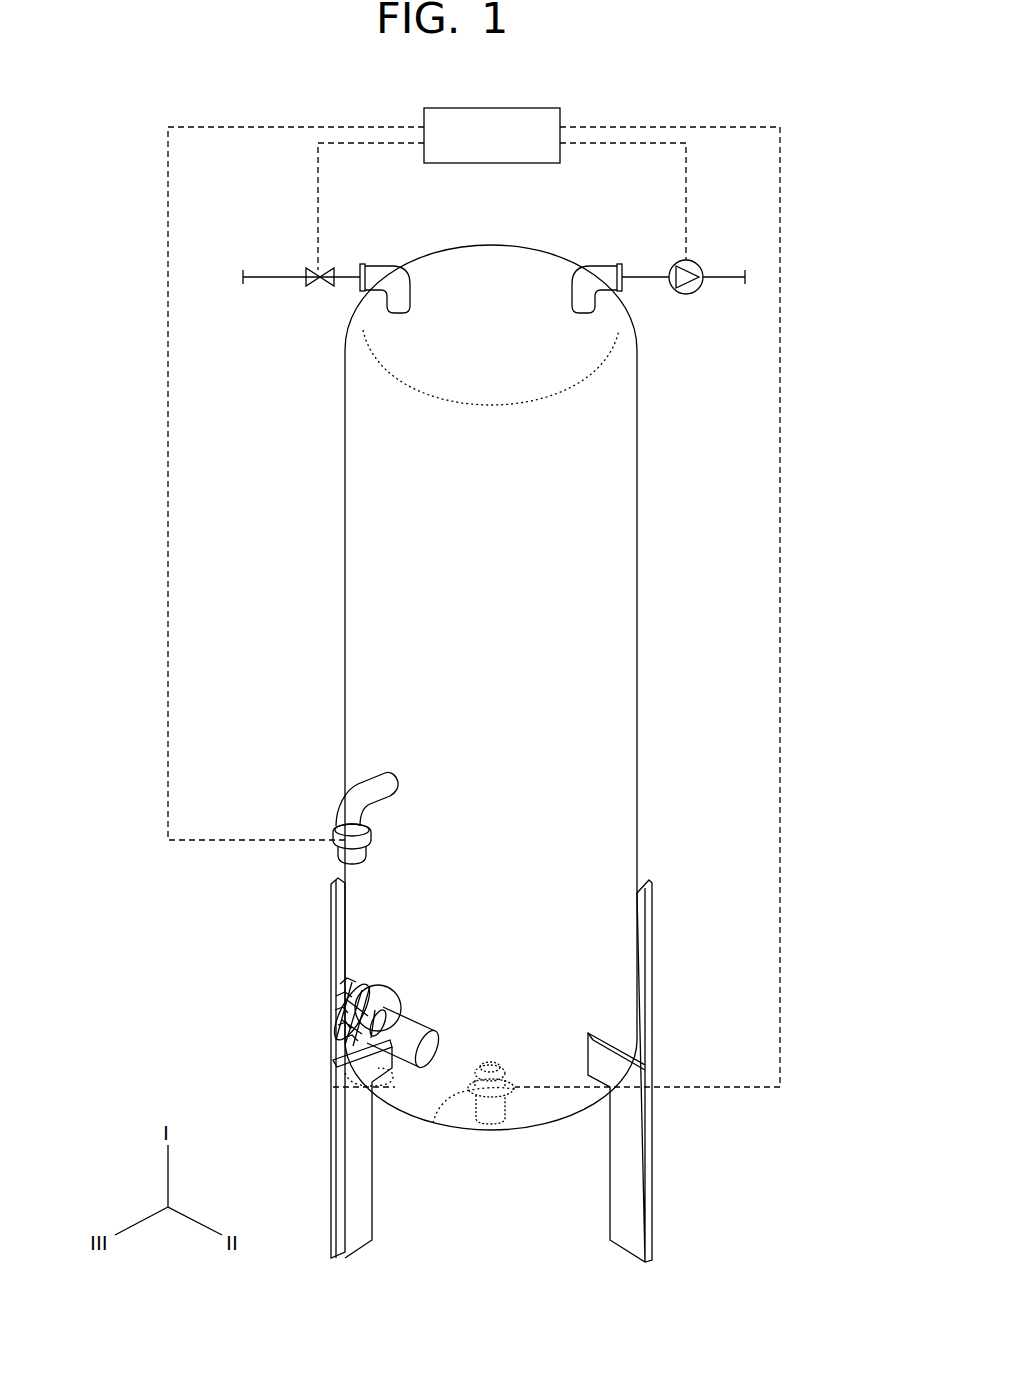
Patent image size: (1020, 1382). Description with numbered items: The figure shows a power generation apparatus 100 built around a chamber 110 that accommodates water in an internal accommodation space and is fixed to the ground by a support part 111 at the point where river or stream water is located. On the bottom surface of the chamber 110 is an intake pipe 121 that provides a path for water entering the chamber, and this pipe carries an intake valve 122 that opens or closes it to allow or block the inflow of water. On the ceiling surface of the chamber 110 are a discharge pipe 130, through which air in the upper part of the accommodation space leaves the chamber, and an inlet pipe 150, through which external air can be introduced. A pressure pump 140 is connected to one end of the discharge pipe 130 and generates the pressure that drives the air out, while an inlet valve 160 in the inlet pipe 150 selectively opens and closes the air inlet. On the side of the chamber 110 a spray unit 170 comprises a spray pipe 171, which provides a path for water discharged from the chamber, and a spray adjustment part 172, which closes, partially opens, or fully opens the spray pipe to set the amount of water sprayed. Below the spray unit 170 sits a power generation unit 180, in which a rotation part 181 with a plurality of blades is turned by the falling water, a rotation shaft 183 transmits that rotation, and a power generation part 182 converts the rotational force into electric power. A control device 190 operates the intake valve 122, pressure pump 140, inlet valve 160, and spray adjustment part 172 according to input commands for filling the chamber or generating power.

The power generation apparatus 100 is at (511, 88).
The chamber 110 is at (640, 710).
The support part 111 is at (653, 1150).
The intake pipe 121 is at (472, 1125).
The intake valve 122 is at (445, 1118).
The discharge pipe 130 is at (600, 262).
The pressure pump 140 is at (698, 267).
The inlet pipe 150 is at (372, 262).
The inlet valve 160 is at (313, 270).
The spray unit 170 is at (240, 740).
The spray pipe 171 is at (368, 784).
The spray adjustment part 172 is at (340, 832).
The power generation unit 180 is at (232, 1012).
The rotation part 181 is at (343, 998).
The power generation part 182 is at (378, 1077).
The rotation shaft 183 is at (358, 1046).
The control device 190 is at (562, 117).